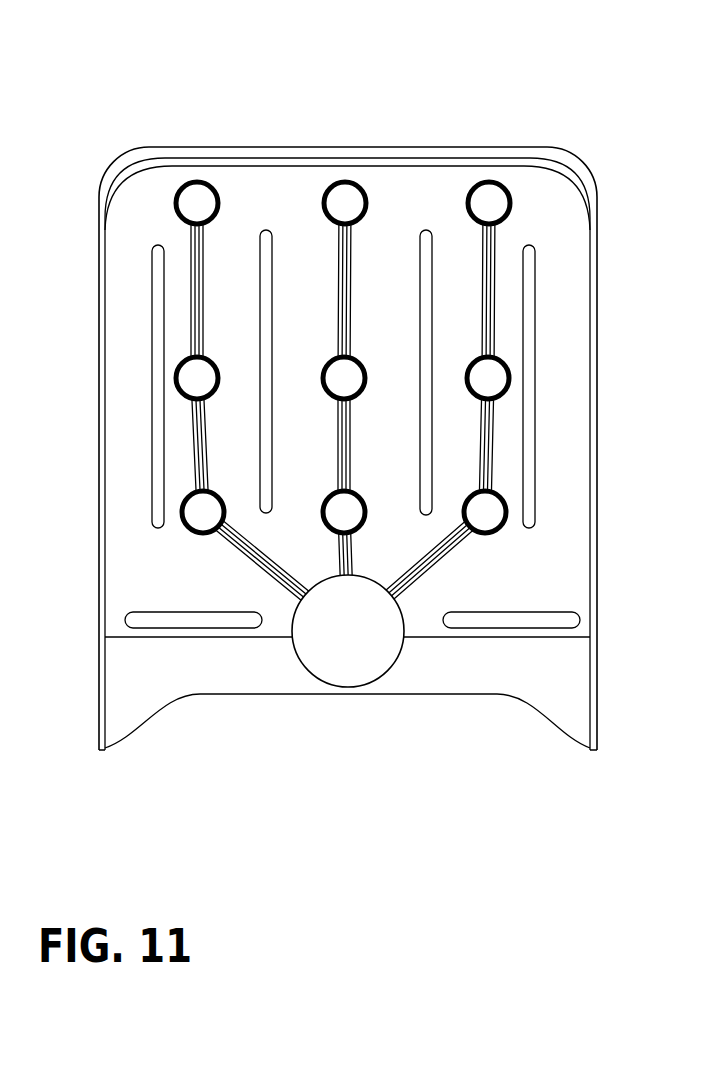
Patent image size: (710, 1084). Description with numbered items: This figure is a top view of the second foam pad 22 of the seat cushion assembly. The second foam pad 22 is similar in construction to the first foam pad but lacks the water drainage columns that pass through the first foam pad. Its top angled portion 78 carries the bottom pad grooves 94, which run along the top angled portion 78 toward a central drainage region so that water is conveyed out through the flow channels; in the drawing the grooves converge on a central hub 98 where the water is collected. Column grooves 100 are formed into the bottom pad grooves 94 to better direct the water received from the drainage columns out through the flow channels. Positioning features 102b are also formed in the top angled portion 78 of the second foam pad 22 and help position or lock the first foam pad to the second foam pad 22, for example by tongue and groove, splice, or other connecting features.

The second foam pad 22 is at (85, 153).
The top angled portion 78 is at (452, 228).
The bottom pad grooves 94 is at (248, 545).
The central hub 98 is at (333, 648).
The column grooves 100 is at (183, 497).
The positioning features 102b is at (157, 530).